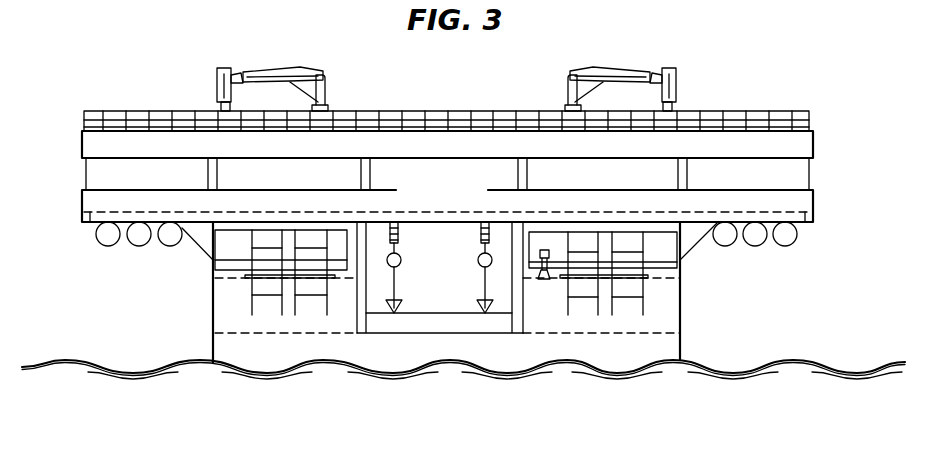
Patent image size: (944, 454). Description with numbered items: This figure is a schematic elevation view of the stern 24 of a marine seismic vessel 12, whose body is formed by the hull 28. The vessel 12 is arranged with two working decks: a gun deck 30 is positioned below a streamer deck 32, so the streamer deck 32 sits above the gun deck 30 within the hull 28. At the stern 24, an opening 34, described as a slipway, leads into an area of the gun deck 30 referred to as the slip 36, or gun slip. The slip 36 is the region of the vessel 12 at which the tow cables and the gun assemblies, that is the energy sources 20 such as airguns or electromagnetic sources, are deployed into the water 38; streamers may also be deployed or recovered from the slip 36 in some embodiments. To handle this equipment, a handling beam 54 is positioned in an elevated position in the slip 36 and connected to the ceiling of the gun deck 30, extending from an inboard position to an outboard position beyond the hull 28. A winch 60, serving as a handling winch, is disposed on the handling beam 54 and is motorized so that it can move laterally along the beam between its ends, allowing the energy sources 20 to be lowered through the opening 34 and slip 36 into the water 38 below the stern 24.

The vessel 12 is at (121, 80).
The stern 24 is at (424, 145).
The hull 28 is at (212, 314).
The gun deck 30 is at (685, 306).
The streamer deck 32 is at (797, 229).
The opening 34 is at (376, 289).
The slip 36 is at (455, 301).
The handling beam 54 is at (399, 255).
The winch 60 is at (479, 255).
The energy sources 20 is at (470, 258).
The water 38 is at (831, 368).